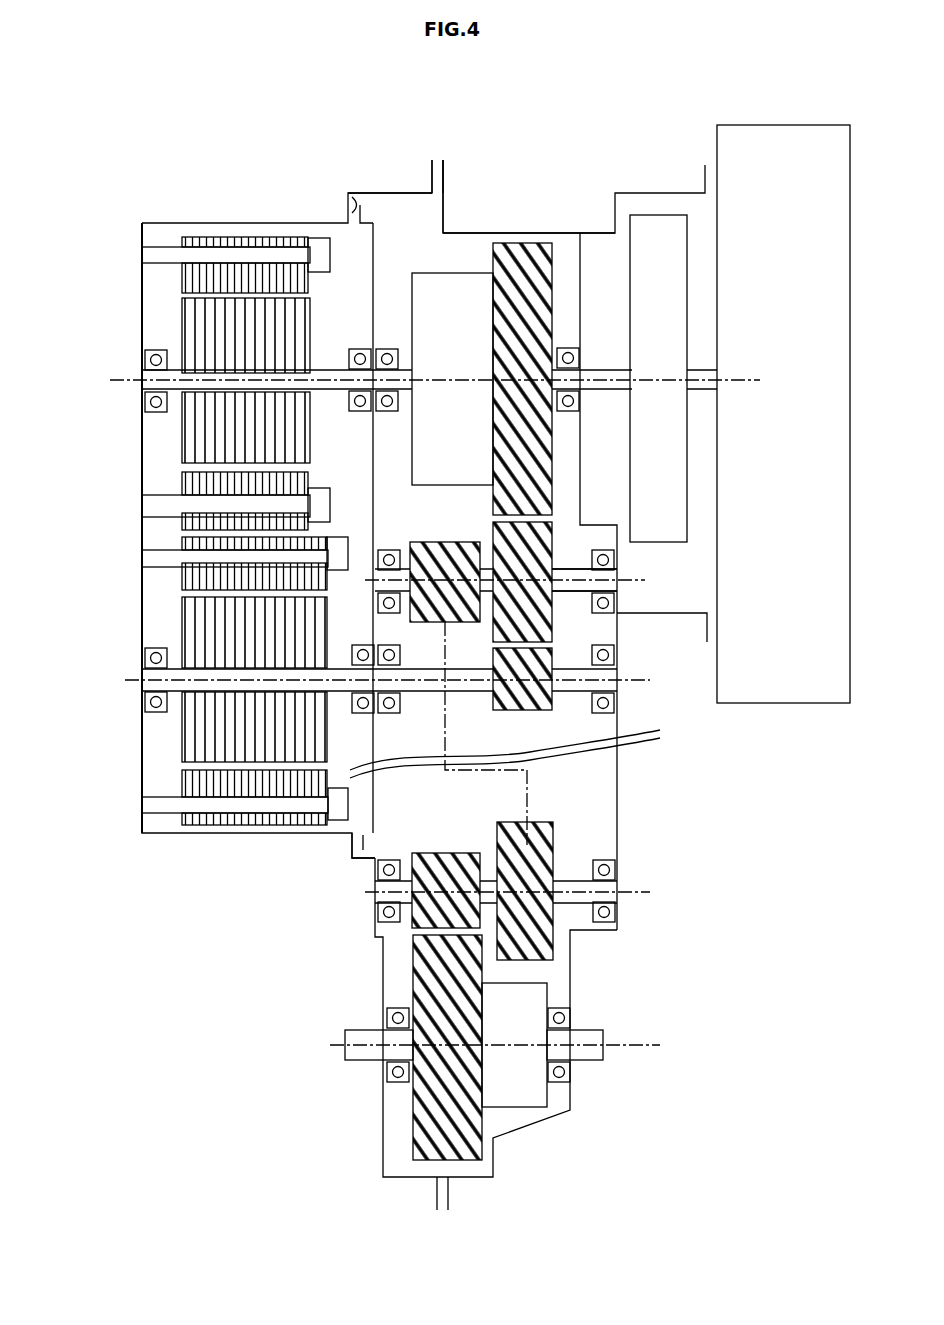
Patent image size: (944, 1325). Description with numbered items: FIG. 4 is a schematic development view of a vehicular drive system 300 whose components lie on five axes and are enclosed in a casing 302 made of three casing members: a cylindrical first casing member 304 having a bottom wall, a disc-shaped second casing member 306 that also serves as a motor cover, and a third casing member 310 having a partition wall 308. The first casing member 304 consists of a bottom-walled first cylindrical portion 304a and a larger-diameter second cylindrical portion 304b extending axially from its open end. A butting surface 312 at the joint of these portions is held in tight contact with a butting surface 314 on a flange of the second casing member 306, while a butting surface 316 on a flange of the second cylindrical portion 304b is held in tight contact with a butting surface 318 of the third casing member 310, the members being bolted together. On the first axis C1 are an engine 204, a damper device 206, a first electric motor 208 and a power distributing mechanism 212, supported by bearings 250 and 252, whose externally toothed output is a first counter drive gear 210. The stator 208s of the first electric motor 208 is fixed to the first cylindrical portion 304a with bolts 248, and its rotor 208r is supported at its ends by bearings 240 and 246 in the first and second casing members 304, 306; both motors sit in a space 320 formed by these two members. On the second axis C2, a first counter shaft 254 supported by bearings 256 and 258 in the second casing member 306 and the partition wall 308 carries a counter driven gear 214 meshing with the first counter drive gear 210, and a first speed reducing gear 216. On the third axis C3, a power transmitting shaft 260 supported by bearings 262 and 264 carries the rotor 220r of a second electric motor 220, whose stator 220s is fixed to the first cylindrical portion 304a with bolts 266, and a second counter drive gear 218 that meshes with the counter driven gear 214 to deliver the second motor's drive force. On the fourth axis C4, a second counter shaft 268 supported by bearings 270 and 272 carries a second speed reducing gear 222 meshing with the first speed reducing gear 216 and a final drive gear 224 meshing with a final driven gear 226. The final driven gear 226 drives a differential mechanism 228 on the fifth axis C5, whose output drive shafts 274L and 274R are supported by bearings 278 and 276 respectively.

The vehicular drive system 300 is at (476, 128).
The casing 302 is at (130, 853).
The first casing member 304 is at (365, 930).
The first cylindrical portion 304a is at (178, 223).
The second cylindrical portion 304b is at (372, 193).
The second casing member 306 is at (373, 305).
The partition wall 308 is at (582, 505).
The third casing member 310 is at (560, 233).
The butting surface 312 is at (352, 205).
The butting surface 314 is at (352, 848).
The butting surface 316 is at (436, 160).
The butting surface 318 is at (443, 220).
The space 320 is at (158, 455).
The engine 204 is at (780, 150).
The damper device 206 is at (665, 228).
The first electric motor 208 is at (233, 208).
The stator 208s is at (275, 275).
The rotor 208r is at (195, 322).
The first counter drive gear 210 is at (520, 275).
The power distributing mechanism 212 is at (463, 250).
The counter driven gear 214 is at (548, 562).
The first speed reducing gear 216 is at (445, 552).
The second counter drive gear 218 is at (540, 700).
The second electric motor 220 is at (250, 838).
The stator 220s is at (210, 787).
The rotor 220r is at (205, 735).
The second speed reducing gear 222 is at (548, 937).
The final drive gear 224 is at (385, 900).
The final driven gear 226 is at (440, 1110).
The differential mechanism 228 is at (523, 1120).
The bearing 240 is at (146, 360).
The bearing 246 is at (352, 358).
The bolts 248 is at (152, 258).
The bearing 250 is at (387, 352).
The bearing 252 is at (570, 355).
The first counter shaft 254 is at (572, 591).
The bearing 256 is at (389, 550).
The bearing 258 is at (618, 603).
The power transmitting shaft 260 is at (415, 692).
The bearing 262 is at (150, 655).
The bearing 264 is at (618, 703).
The bolts 266 is at (162, 557).
The second counter shaft 268 is at (578, 882).
The bearing 270 is at (392, 863).
The bearing 272 is at (618, 870).
The drive shaft 274L is at (355, 1052).
The drive shaft 274R is at (582, 1056).
The bearing 276 is at (570, 1008).
The bearing 278 is at (388, 1010).
The first axis C1 is at (135, 385).
The second axis C2 is at (628, 580).
The third axis C3 is at (632, 679).
The fourth axis C4 is at (630, 893).
The fifth axis C5 is at (630, 1042).